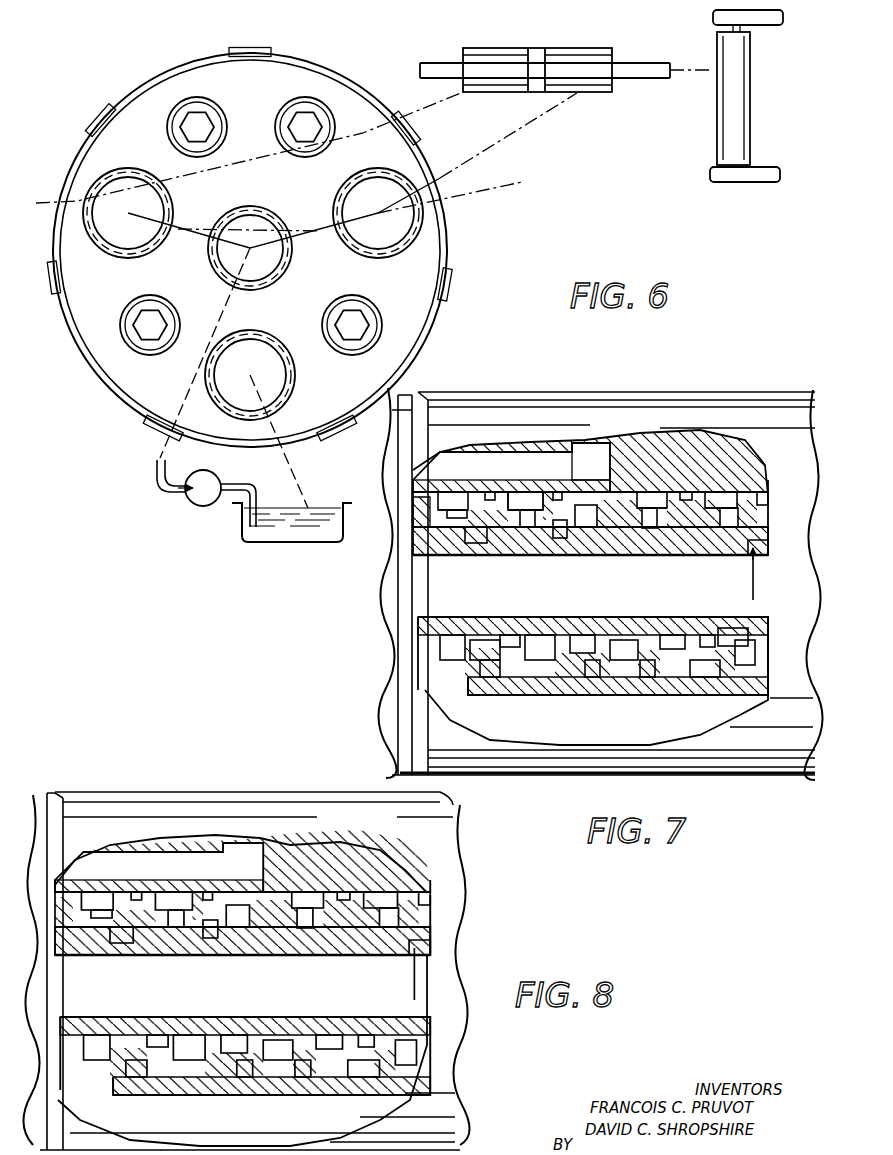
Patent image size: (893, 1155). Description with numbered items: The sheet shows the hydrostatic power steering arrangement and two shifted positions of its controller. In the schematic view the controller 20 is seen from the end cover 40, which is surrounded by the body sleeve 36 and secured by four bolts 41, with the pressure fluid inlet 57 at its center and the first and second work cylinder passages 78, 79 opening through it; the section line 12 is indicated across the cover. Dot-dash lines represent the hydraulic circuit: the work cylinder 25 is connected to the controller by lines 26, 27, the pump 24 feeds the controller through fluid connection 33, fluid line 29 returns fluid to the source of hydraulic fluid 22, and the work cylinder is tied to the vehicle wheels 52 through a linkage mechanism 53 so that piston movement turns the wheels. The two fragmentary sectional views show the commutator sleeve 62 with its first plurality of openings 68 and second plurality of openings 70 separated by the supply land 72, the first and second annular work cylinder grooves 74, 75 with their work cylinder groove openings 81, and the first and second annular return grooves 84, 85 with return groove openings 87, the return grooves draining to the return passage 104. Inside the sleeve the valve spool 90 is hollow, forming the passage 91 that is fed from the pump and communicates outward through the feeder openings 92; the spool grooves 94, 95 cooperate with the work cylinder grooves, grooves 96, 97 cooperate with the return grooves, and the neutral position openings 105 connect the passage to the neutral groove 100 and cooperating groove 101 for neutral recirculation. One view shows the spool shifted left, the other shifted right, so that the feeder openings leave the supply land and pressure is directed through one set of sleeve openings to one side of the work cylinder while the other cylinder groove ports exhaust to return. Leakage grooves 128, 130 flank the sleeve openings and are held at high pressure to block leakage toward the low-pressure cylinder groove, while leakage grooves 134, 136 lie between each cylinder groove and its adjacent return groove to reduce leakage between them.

In FIG. 6, the section line 12- 12 is at (42, 192).
In FIG. 6, the controller 20 is at (482, 266).
In FIG. 6, the source of hydraulic fluid 22 is at (283, 546).
In FIG. 6, the pump 24 is at (203, 507).
In FIG. 6, the work cylinder 25 is at (537, 48).
In FIG. 6, the fluid line 26 is at (430, 102).
In FIG. 6, the fluid line 27 is at (507, 138).
In FIG. 6, the fluid line 29 is at (293, 470).
In FIG. 6, the fluid connection 33 is at (168, 446).
In FIG. 6, the body sleeve 36 is at (180, 62).
In FIG. 6, the end cover 40 is at (150, 113).
In FIG. 6, the bolts 41 is at (299, 126).
In FIG. 6, the wheels 52 is at (760, 25).
In FIG. 6, the linkage mechanism 53 is at (683, 68).
In FIG. 6, the pressure fluid inlet 57 is at (283, 249).
In FIG. 7, the commutator sleeve 62 is at (745, 480).
In FIG. 7, the first plurality of openings 68 is at (585, 510).
In FIG. 8, the first plurality of openings 68 is at (215, 1095).
In FIG. 7, the second plurality of openings 70 is at (600, 694).
In FIG. 8, the second plurality of openings 70 is at (240, 920).
In FIG. 7, the supply land 72 is at (585, 630).
In FIG. 8, the supply land 72 is at (232, 950).
In FIG. 7, the first annular work cylinder groove 74 is at (530, 538).
In FIG. 8, the first annular work cylinder groove 74 is at (178, 940).
In FIG. 7, the second annular work cylinder groove 75 is at (678, 540).
In FIG. 8, the second annular work cylinder groove 75 is at (313, 950).
In FIG. 6, the first work cylinder passage 78 is at (100, 200).
In FIG. 6, the second work cylinder passage 79 is at (342, 214).
In FIG. 7, the work cylinder groove openings 81 is at (642, 632).
In FIG. 8, the work cylinder groove openings 81 is at (152, 950).
In FIG. 7, the first annular return groove 84 is at (445, 650).
In FIG. 8, the first annular return groove 84 is at (93, 1075).
In FIG. 7, the second annular return groove 85 is at (722, 628).
In FIG. 8, the second annular return groove 85 is at (360, 1075).
In FIG. 7, the return groove openings 87 is at (703, 632).
In FIG. 8, the return groove openings 87 is at (97, 945).
In FIG. 7, the valve spool 90 is at (476, 618).
In FIG. 8, the valve spool 90 is at (141, 996).
In FIG. 7, the passage 91 is at (537, 603).
In FIG. 8, the passage 91 is at (263, 995).
In FIG. 7, the feeder openings 92 is at (578, 540).
In FIG. 8, the feeder openings 92 is at (232, 1035).
In FIG. 7, the groove 94 is at (500, 540).
In FIG. 8, the groove 94 is at (190, 950).
In FIG. 7, the groove 95 is at (625, 538).
In FIG. 8, the groove 95 is at (296, 950).
In FIG. 7, the groove 96 is at (470, 535).
In FIG. 8, the groove 96 is at (136, 940).
In FIG. 7, the groove 97 is at (710, 545).
In FIG. 8, the groove 97 is at (345, 962).
In FIG. 8, the neutral groove 100 is at (396, 952).
In FIG. 8, the cooperating groove 101 is at (360, 950).
In FIG. 7, the return passage 104 is at (530, 723).
In FIG. 8, the return passage 104 is at (222, 1118).
In FIG. 7, the neutral position openings 105 is at (758, 542).
In FIG. 8, the neutral position openings 105 is at (412, 1040).
In FIG. 7, the annular groove 128 is at (555, 492).
In FIG. 8, the annular groove 128 is at (198, 892).
In FIG. 7, the annular groove 130 is at (605, 495).
In FIG. 8, the annular groove 130 is at (252, 895).
In FIG. 7, the leakage groove 134 is at (485, 492).
In FIG. 8, the leakage groove 134 is at (132, 892).
In FIG. 7, the leakage groove 136 is at (660, 495).
In FIG. 8, the leakage groove 136 is at (322, 893).